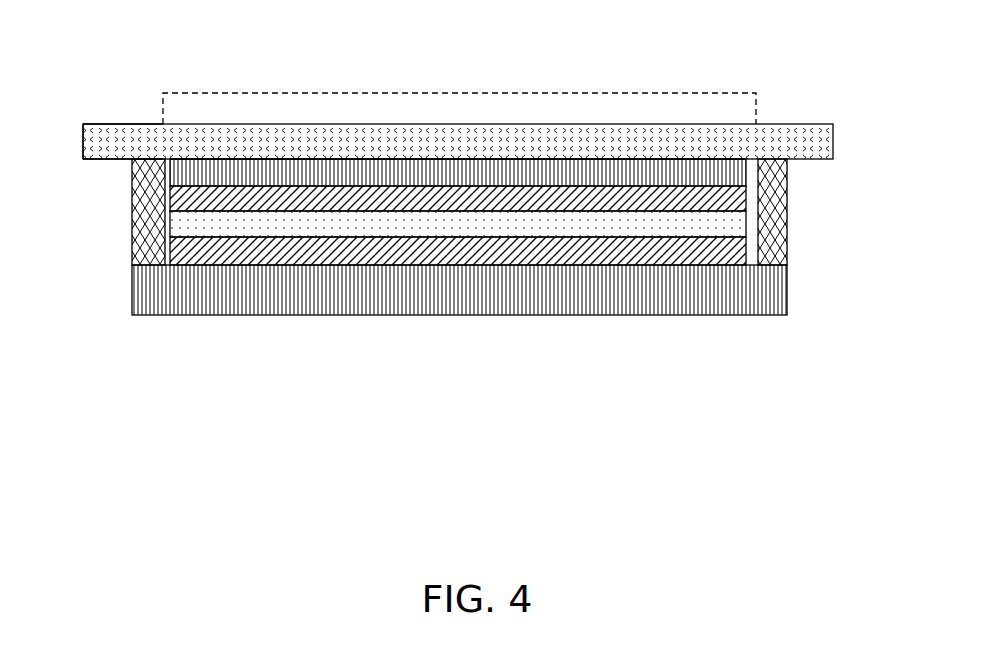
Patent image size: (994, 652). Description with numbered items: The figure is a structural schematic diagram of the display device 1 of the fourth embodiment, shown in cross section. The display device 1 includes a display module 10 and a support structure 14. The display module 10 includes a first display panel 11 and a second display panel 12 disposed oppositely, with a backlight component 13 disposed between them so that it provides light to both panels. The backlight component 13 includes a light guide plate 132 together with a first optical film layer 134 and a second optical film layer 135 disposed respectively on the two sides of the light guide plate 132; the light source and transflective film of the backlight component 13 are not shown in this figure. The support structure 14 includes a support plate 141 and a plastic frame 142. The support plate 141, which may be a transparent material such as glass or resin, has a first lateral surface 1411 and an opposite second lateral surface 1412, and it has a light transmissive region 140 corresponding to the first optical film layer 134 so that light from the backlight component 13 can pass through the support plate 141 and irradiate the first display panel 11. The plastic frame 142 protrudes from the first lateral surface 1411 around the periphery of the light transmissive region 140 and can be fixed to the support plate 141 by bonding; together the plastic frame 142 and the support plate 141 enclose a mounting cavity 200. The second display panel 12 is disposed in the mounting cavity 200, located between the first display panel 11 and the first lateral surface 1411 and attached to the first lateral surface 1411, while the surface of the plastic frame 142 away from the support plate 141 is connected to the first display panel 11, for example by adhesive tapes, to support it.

The display device 1 is at (478, 271).
The display module 10 is at (460, 346).
The first display panel 11 is at (738, 307).
The second display panel 12 is at (180, 169).
The backlight component 13 is at (460, 359).
The light guide plate 132 is at (731, 227).
The first optical film layer 134 is at (742, 253).
The second optical film layer 135 is at (175, 198).
The support structure 14 is at (478, 210).
The light transmissive region 140 is at (513, 90).
The support plate 141 is at (511, 203).
The first lateral surface 1411 is at (233, 158).
The second lateral surface 1412 is at (107, 124).
The plastic frame 142 is at (770, 185).
The mounting cavity 200 is at (466, 222).